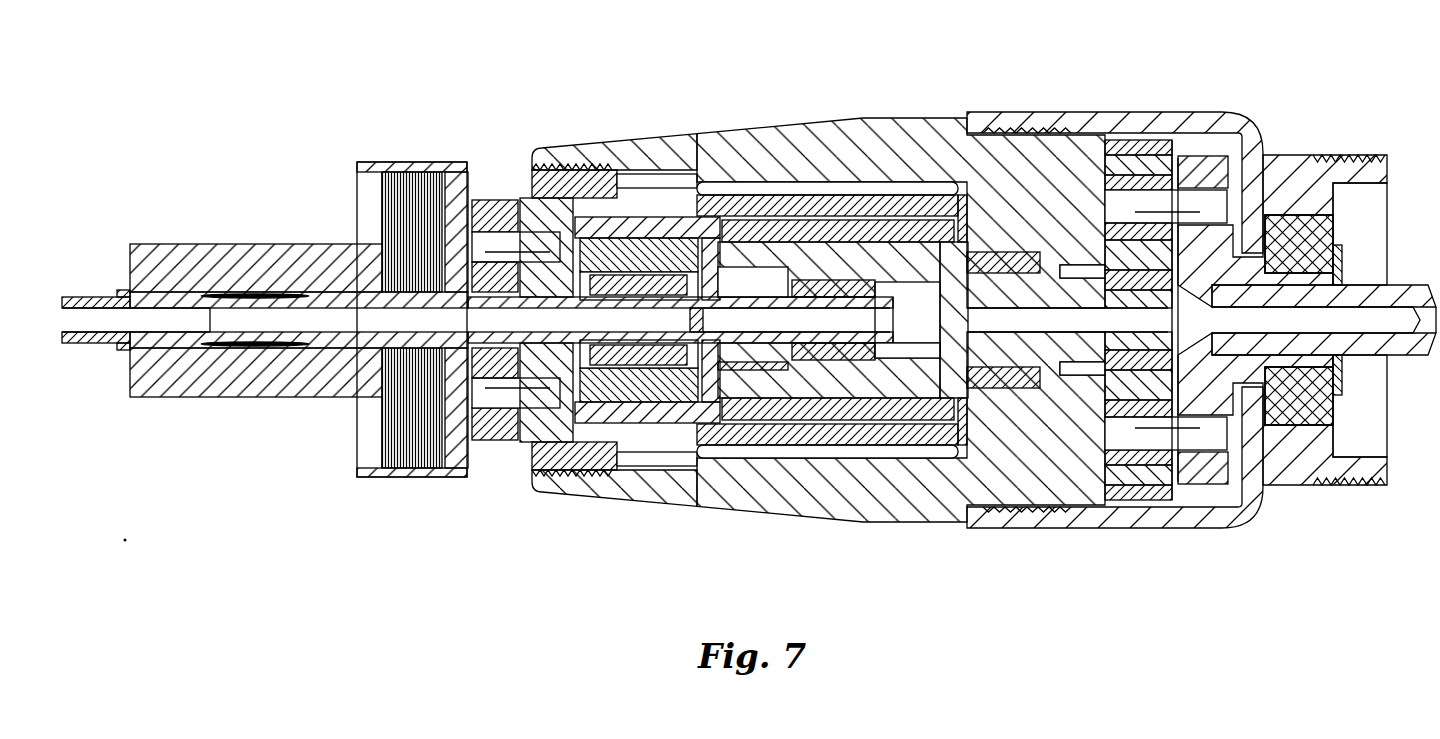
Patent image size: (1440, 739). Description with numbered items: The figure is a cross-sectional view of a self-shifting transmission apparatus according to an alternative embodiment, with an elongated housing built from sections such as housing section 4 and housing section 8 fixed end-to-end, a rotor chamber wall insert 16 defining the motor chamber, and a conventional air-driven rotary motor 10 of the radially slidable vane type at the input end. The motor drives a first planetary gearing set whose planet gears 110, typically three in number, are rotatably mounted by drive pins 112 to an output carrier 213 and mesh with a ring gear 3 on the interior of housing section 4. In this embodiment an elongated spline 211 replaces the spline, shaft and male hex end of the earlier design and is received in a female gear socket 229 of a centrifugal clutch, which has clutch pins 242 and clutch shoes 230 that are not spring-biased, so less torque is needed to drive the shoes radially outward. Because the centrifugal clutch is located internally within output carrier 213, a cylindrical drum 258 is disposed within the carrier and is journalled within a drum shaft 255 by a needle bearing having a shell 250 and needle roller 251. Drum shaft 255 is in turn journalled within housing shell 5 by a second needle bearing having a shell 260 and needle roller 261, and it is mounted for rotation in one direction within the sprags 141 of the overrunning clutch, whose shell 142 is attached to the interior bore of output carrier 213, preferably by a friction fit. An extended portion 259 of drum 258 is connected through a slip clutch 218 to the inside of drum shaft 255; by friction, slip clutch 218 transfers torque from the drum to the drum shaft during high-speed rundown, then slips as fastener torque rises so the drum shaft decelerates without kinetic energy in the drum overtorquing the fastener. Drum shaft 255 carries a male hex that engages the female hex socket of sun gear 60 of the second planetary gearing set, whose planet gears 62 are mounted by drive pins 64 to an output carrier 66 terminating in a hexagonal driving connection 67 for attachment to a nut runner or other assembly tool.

The ring gear 3 is at (450, 418).
The housing section 4 is at (533, 148).
The housing shell 5 is at (937, 153).
The housing section 8 is at (1195, 122).
The rotary motor 10 is at (202, 250).
The rotor chamber wall insert 16 is at (450, 212).
The sun gear 60 is at (1145, 363).
The planet gears 62 is at (1143, 157).
The drive pins 64 is at (1117, 205).
The output carrier 66 is at (1196, 450).
The hexagonal driving connection 67 is at (1393, 293).
The planet gears 110 is at (490, 210).
The drive pins 112 is at (505, 240).
The sprags 141 is at (793, 233).
The shell 142 is at (855, 217).
The elongated spline 211 is at (497, 340).
The output carrier 213 is at (887, 203).
The slip clutch 218 is at (753, 280).
The female gear socket 229 is at (620, 280).
The clutch shoes 230 is at (645, 250).
The clutch pins 242 is at (633, 380).
The shell 250 is at (853, 357).
The needle roller 251 is at (873, 377).
The drum shaft 255 is at (922, 375).
The cylindrical drum 258 is at (672, 410).
The extended portion 259 is at (765, 352).
The shell 260 is at (1000, 392).
The needle roller 261 is at (1052, 415).